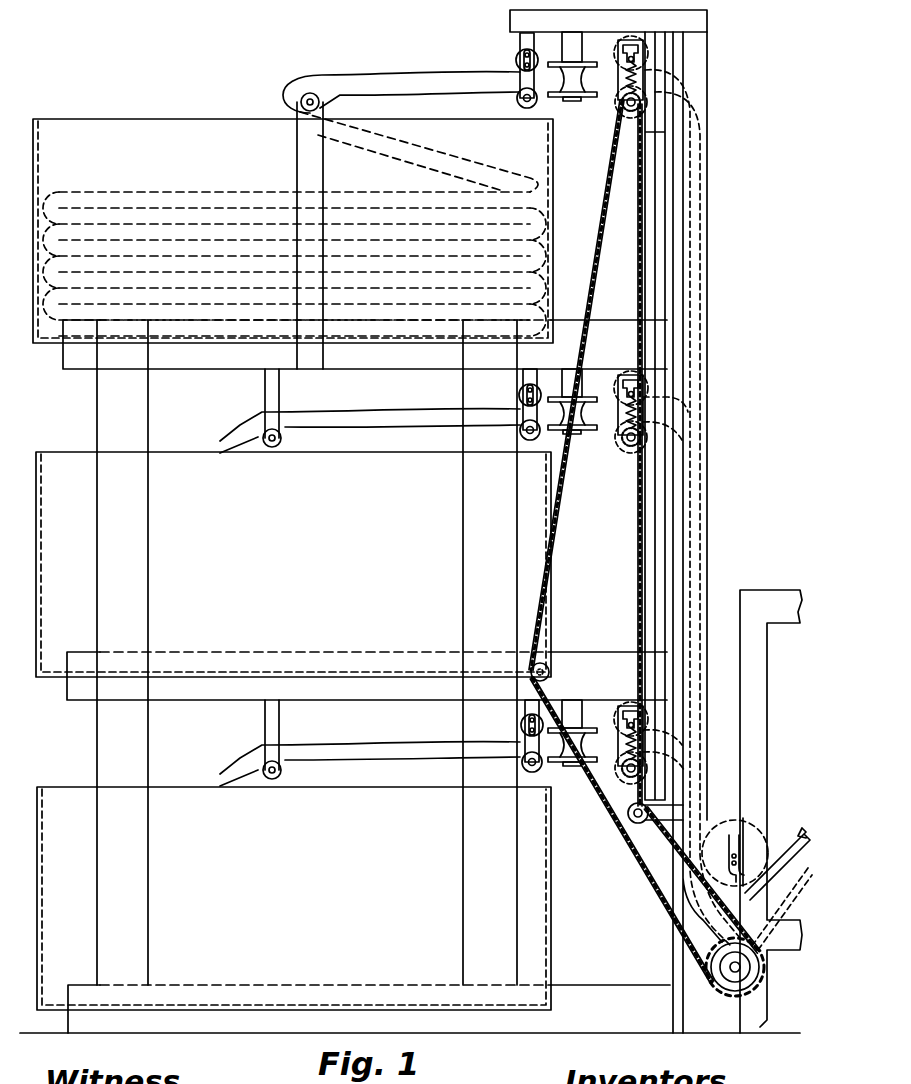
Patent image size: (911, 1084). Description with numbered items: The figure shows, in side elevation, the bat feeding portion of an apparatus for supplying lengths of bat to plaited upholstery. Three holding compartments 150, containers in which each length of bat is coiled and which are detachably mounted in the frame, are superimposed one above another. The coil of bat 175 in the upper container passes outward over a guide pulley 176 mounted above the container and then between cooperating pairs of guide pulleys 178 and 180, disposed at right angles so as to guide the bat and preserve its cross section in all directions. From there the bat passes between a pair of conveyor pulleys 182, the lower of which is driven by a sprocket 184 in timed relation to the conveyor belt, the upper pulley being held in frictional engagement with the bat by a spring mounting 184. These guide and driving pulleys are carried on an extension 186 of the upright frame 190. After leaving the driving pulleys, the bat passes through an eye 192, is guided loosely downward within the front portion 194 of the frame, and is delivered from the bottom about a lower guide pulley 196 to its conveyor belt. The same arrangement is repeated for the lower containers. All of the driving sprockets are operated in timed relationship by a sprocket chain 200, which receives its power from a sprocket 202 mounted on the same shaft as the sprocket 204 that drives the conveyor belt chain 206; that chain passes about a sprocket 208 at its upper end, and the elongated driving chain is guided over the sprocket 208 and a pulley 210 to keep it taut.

The holding compartment 150 is at (80, 132).
The coil of bat 175 is at (180, 200).
The guide pulley 176 is at (335, 72).
The guide pulley 178 is at (515, 65).
The guide pulley 180 is at (590, 96).
The conveyor pulley 182 is at (644, 45).
The sprocket 184 is at (645, 72).
The extension 186 is at (508, 20).
The upright frame 190 is at (676, 185).
The eye 192 is at (670, 72).
The front portion of the frame 194 is at (712, 88).
The guide pulley 196 is at (722, 838).
The sprocket chain 200 is at (630, 540).
The sprocket 202 is at (720, 968).
The sprocket 204 is at (760, 905).
The conveyor belt chain 206 is at (762, 878).
The sprocket 208 is at (628, 813).
The pulley 210 is at (550, 668).